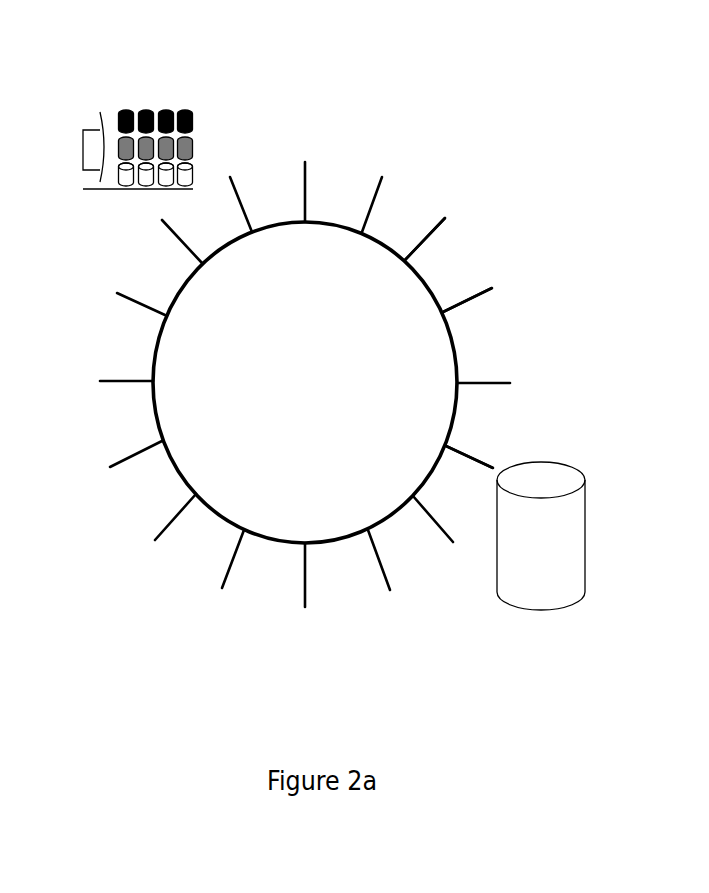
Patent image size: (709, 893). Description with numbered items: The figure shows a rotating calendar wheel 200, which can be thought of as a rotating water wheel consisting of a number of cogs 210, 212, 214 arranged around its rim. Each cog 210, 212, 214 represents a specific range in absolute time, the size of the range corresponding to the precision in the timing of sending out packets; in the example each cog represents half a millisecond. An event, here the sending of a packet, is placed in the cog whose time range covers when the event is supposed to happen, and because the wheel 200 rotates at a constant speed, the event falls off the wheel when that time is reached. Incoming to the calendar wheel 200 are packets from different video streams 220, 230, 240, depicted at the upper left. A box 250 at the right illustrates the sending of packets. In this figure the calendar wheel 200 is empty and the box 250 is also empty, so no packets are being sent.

The calendar wheel 200 is at (292, 410).
The cog 210 is at (402, 220).
The cog 212 is at (460, 275).
The cog 214 is at (487, 337).
The video stream 220 is at (193, 125).
The video stream 230 is at (193, 148).
The video stream 240 is at (193, 175).
The box 250 is at (585, 537).